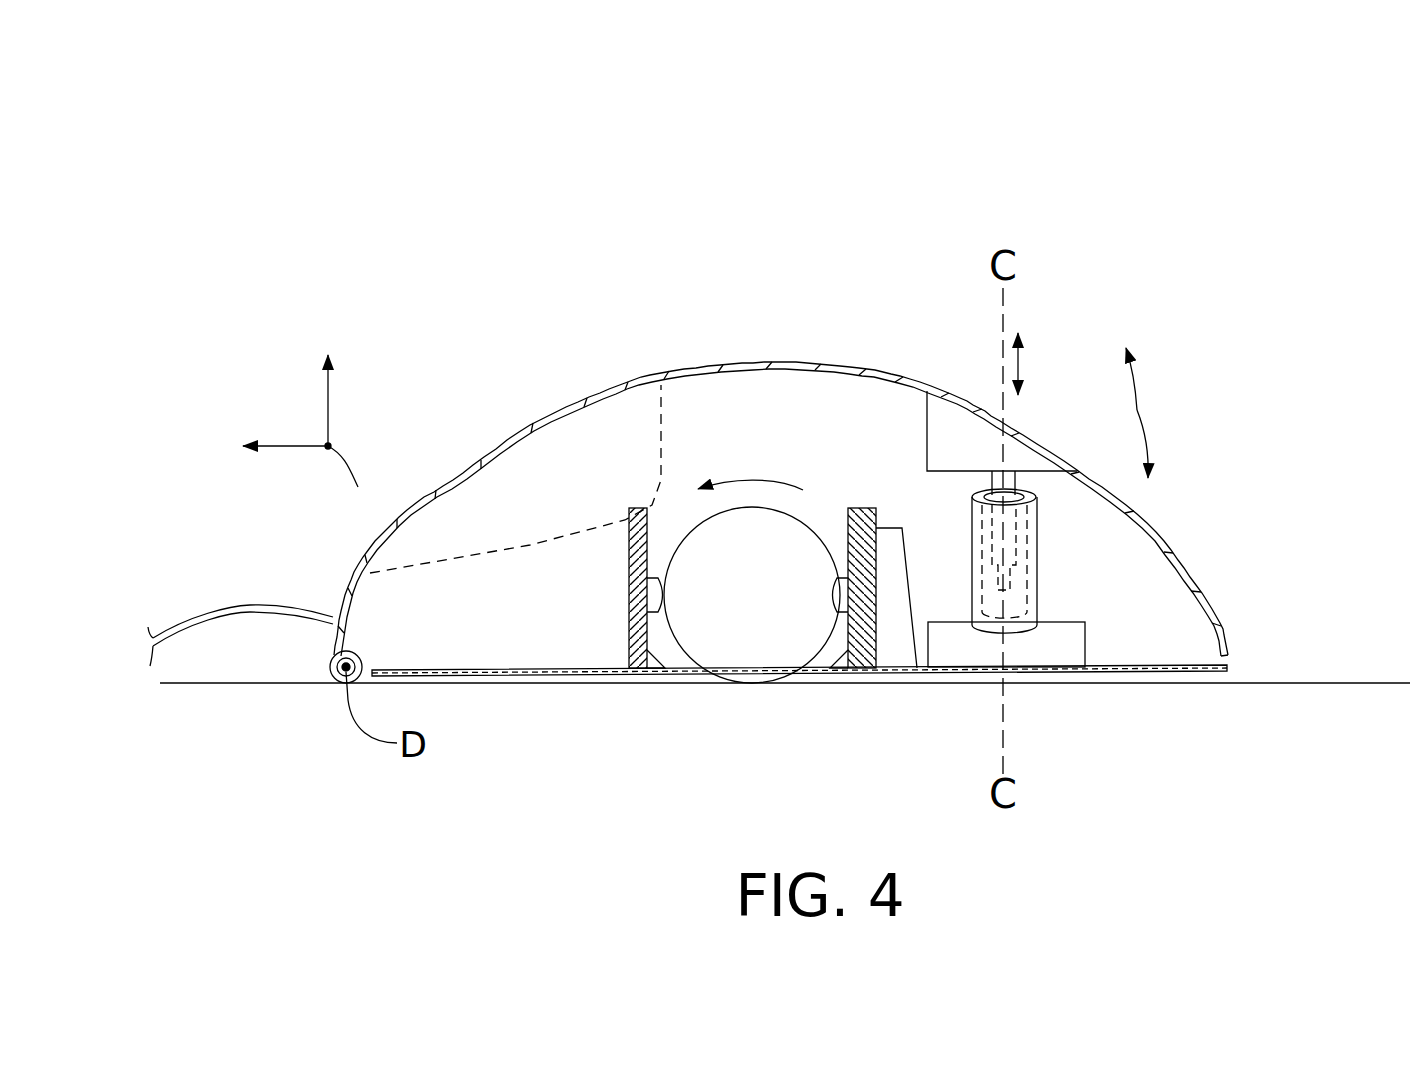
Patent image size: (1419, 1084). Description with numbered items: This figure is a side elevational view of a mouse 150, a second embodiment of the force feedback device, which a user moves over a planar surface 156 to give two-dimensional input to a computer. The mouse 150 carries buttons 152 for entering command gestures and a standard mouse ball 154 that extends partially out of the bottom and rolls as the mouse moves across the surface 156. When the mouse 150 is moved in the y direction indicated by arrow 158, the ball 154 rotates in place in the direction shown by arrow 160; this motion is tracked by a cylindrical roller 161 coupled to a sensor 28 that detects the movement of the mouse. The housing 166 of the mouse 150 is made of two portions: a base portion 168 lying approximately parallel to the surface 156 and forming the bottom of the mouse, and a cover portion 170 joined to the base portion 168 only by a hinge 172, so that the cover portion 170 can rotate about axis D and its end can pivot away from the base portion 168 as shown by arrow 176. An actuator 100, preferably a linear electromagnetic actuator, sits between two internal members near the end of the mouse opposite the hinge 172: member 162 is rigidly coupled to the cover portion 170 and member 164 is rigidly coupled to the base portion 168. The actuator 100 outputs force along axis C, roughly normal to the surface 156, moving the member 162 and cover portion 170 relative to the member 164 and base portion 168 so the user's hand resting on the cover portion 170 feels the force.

The sensor 28 is at (891, 528).
The actuator 100 is at (1052, 546).
The mouse 150 is at (434, 204).
The buttons 152 is at (575, 445).
The mouse ball 154 is at (748, 668).
The planar surface 156 is at (1346, 680).
The arrow 158 is at (318, 446).
The arrow 160 is at (745, 478).
The cylindrical roller 161 is at (852, 598).
The member 162 is at (952, 482).
The member 164 is at (1062, 616).
The housing 166 is at (1166, 659).
The base portion 168 is at (538, 678).
The cover portion 170 is at (785, 362).
The hinge 172 is at (328, 680).
The arrow 176 is at (1150, 398).